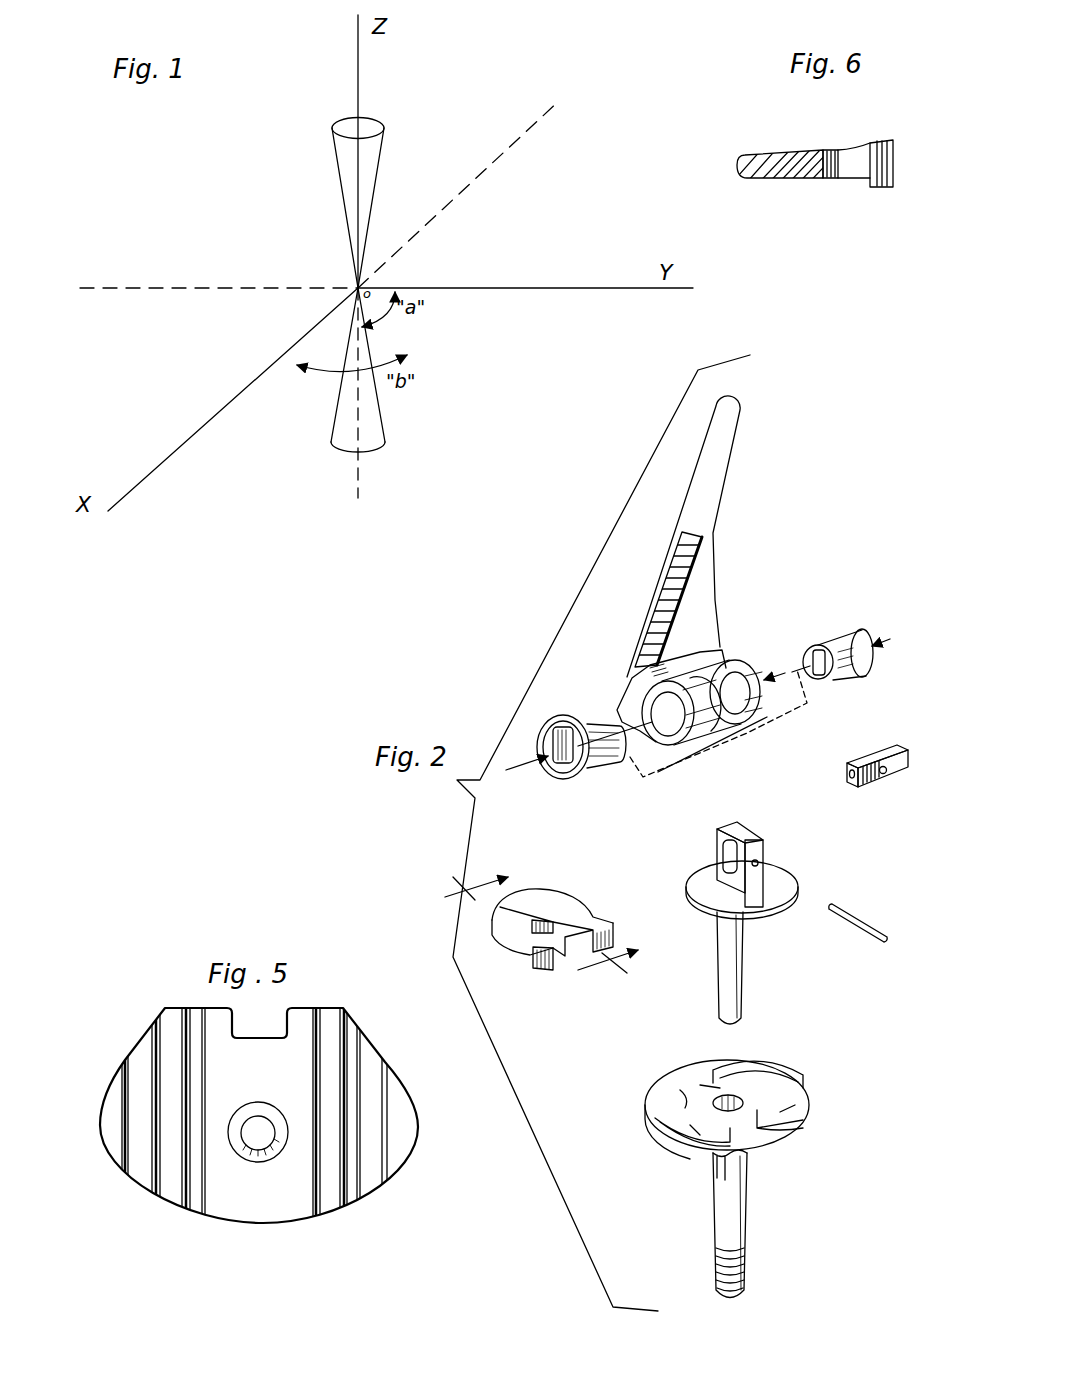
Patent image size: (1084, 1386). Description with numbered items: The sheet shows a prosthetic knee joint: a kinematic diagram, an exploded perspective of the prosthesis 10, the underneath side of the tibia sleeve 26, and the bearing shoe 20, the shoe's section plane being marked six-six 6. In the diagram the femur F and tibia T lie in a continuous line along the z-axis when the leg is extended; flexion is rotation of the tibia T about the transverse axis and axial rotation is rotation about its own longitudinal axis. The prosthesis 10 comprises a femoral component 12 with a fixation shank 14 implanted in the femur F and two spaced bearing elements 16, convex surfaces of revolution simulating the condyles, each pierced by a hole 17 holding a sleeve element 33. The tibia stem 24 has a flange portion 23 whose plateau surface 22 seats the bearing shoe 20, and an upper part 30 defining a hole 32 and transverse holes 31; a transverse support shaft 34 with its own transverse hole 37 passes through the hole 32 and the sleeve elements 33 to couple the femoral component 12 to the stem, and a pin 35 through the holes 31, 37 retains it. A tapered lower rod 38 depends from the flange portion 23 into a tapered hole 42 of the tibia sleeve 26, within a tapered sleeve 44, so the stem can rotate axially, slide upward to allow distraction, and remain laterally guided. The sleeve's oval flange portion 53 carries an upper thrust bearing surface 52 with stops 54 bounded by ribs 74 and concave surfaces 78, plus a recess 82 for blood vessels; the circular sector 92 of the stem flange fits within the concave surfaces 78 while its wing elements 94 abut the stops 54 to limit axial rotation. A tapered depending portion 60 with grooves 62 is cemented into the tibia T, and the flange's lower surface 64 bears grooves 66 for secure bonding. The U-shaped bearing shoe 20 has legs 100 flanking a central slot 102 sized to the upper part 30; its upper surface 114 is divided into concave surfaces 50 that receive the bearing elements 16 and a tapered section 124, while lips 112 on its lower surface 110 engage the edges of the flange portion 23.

In FIG. 2, the prosthesis 10 is at (849, 573).
In FIG. 2, the femoral component 12 is at (745, 497).
In FIG. 2, the fixation shank 14 is at (688, 580).
In FIG. 2, the bearing elements 16 is at (727, 661).
In FIG. 2, the holes 17 is at (748, 702).
In FIG. 6, the bearing shoe 20 is at (812, 156).
In FIG. 2, the bearing shoe 20 is at (550, 936).
In FIG. 2, the plateau surface 22 is at (698, 900).
In FIG. 2, the flange portion 23 is at (690, 907).
In FIG. 2, the tibia stem 24 is at (747, 908).
In FIG. 2, the tibia sleeve 26 is at (741, 1160).
In FIG. 5, the tibia sleeve 26 is at (237, 1135).
In FIG. 2, the upper part 30 is at (754, 880).
In FIG. 2, the holes 31 is at (757, 860).
In FIG. 2, the hole 32 is at (728, 840).
In FIG. 2, the sleeve element 33 is at (590, 722).
In FIG. 2, the transverse support shaft 34 is at (872, 795).
In FIG. 2, the pin 35 is at (869, 928).
In FIG. 2, the transverse hole 37 is at (881, 775).
In FIG. 2, the lower rod 38 is at (730, 997).
In FIG. 2, the hole 42 is at (736, 1106).
In FIG. 5, the sleeve 44 is at (253, 1125).
In FIG. 6, the concave upper surfaces 50 is at (850, 152).
In FIG. 2, the concave upper surfaces 50 is at (514, 941).
In FIG. 2, the upper thrust bearing surface 52 is at (786, 1102).
In FIG. 2, the flange portion 53 is at (655, 1130).
In FIG. 5, the flange portion 53 is at (125, 1175).
In FIG. 2, the stops 54 is at (771, 1066).
In FIG. 2, the depending portion 60 is at (736, 1224).
In FIG. 2, the grooves 62 is at (746, 1264).
In FIG. 5, the lower surface 64 is at (293, 1198).
In FIG. 2, the grooves 66 is at (720, 1158).
In FIG. 5, the grooves 66 is at (348, 1178).
In FIG. 2, the ribs 74 is at (799, 1076).
In FIG. 2, the concave surfaces 78 is at (739, 1064).
In FIG. 2, the recess 82 is at (700, 1075).
In FIG. 2, the circular sector 92 is at (710, 860).
In FIG. 2, the wing elements 94 is at (795, 860).
In FIG. 6, the legs 100 is at (847, 170).
In FIG. 2, the legs 100 is at (613, 918).
In FIG. 2, the central slot 102 is at (563, 946).
In FIG. 6, the lower surface 110 is at (778, 181).
In FIG. 6, the lips 112 is at (882, 188).
In FIG. 6, the upper surface 114 is at (780, 160).
In FIG. 6, the tapered section 124 is at (742, 158).
In FIG. 2, the section line 6- 6 is at (552, 915).
In FIG. 1, the femur F is at (382, 157).
In FIG. 1, the tibia T is at (380, 412).